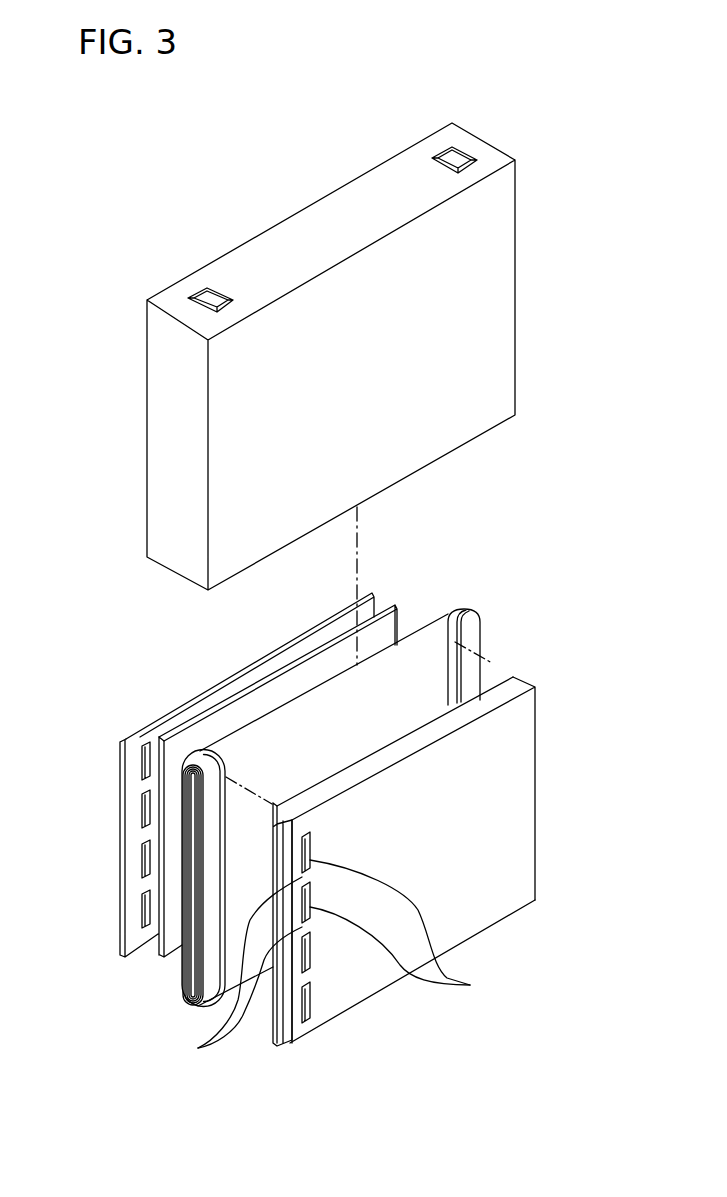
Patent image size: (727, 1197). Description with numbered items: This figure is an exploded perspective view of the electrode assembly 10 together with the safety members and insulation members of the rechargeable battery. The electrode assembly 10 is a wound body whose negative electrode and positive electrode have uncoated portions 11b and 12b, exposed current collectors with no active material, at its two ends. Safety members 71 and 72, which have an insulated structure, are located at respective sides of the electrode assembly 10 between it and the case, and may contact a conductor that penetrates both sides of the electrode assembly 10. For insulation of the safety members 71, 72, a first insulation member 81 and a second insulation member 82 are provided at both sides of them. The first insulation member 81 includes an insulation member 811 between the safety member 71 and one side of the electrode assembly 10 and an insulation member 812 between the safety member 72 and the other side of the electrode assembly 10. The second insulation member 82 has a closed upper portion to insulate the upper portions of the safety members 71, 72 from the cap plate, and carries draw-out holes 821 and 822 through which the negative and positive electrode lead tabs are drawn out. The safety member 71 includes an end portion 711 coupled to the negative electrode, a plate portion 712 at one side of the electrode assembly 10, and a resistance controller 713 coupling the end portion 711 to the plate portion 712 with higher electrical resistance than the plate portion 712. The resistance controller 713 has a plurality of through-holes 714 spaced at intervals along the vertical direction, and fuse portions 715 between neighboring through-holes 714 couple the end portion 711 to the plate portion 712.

The electrode assembly 10 is at (318, 777).
The uncoated portion of the negative electrode 11b is at (197, 760).
The uncoated portion of the positive electrode 12b is at (463, 610).
The safety member 71 is at (358, 917).
The end portion 711 is at (277, 1027).
The plate portion 712 is at (367, 980).
The resistance controller 713 is at (307, 1037).
The through-holes 714 is at (470, 985).
The fuse portions 715 is at (198, 1048).
The safety member 72 is at (323, 623).
The first insulation member 81 is at (411, 666).
The insulation member 811 is at (493, 672).
The insulation member 812 is at (387, 607).
The second insulation member 82 is at (331, 332).
The draw-out hole 821 is at (202, 293).
The draw-out hole 822 is at (448, 155).